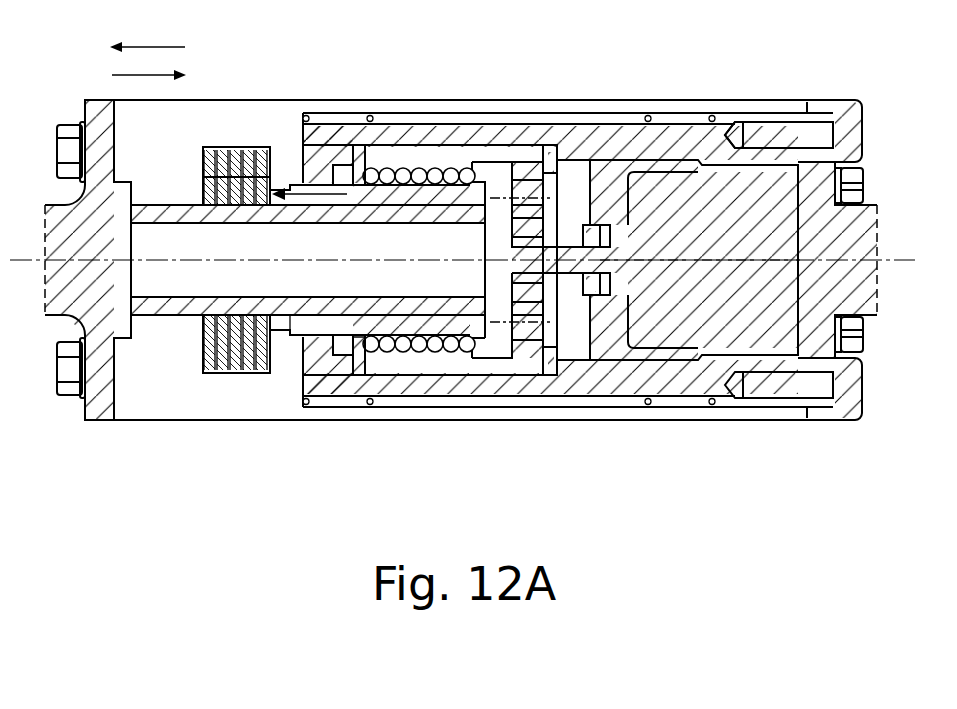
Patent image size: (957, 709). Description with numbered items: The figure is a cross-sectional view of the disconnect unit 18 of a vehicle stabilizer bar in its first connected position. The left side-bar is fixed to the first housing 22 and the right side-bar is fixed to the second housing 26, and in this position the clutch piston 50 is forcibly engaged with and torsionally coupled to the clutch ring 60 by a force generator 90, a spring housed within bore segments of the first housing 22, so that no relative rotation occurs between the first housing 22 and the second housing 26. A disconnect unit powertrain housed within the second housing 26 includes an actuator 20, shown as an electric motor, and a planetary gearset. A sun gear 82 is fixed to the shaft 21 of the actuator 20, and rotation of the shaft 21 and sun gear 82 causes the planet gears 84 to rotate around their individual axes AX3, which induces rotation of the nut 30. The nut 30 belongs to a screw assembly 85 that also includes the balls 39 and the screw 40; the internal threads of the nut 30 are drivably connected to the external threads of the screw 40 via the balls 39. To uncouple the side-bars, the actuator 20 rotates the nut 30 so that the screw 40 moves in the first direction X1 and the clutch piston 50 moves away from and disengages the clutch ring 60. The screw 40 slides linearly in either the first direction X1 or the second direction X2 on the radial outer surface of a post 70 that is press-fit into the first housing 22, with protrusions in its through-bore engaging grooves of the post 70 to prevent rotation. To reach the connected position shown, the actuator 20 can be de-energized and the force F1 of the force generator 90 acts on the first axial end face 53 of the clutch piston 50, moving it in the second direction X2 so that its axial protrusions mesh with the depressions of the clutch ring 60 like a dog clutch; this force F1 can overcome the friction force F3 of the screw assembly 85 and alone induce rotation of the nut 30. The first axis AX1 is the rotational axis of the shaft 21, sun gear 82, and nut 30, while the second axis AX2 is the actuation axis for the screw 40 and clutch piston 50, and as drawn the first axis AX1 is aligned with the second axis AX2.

The disconnect unit 18 is at (392, 94).
The actuator 20 is at (757, 200).
The shaft 21 is at (562, 243).
The first housing 22 is at (693, 110).
The second housing 26 is at (610, 375).
The nut 30 is at (437, 150).
The balls 39 is at (410, 340).
The screw 40 is at (467, 352).
The clutch piston 50 is at (293, 358).
The first axial end face 53 is at (289, 100).
The clutch ring 60 is at (333, 390).
The post 70 is at (278, 314).
The sun gear 82 is at (548, 374).
The planet gears 84 is at (532, 172).
The screw assembly 85 is at (468, 142).
The force generator 90 is at (228, 365).
The first axis AX1 is at (707, 262).
The second axis AX2 is at (193, 297).
The individual axes of the planet gears AX3 is at (490, 198).
The force of the force generator F1 is at (251, 100).
The friction force F3 is at (355, 100).
The first direction X1 is at (163, 49).
The second direction X2 is at (164, 77).